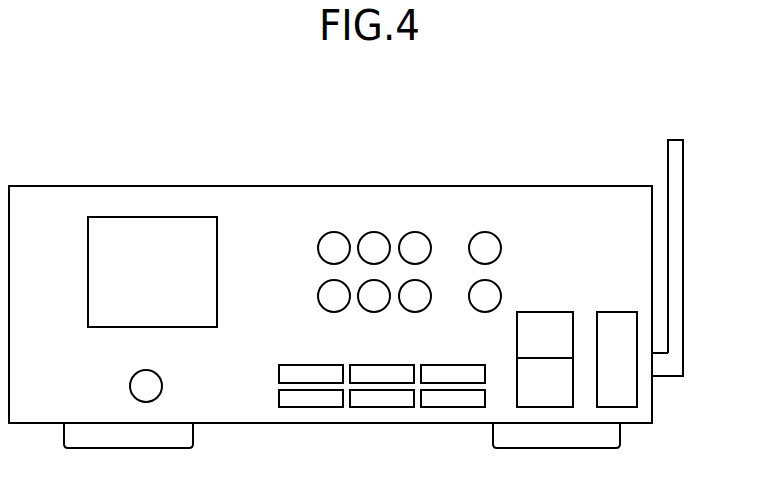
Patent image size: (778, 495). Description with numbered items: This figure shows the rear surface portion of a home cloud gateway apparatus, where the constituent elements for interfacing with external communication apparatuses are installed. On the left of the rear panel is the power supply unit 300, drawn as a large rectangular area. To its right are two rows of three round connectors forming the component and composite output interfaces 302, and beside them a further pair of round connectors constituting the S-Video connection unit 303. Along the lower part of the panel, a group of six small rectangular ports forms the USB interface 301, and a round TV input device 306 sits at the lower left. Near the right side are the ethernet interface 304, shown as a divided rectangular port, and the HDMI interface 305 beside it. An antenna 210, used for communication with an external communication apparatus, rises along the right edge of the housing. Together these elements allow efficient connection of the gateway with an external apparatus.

The antenna 210 is at (685, 216).
The power supply unit 300 is at (88, 272).
The USB interface 301 is at (278, 372).
The component and composite output interfaces 302 is at (318, 247).
The S-Video connection unit 303 is at (487, 233).
The ethernet interface 304 is at (547, 311).
The HDMI interface 305 is at (618, 311).
The TV input device 306 is at (129, 386).